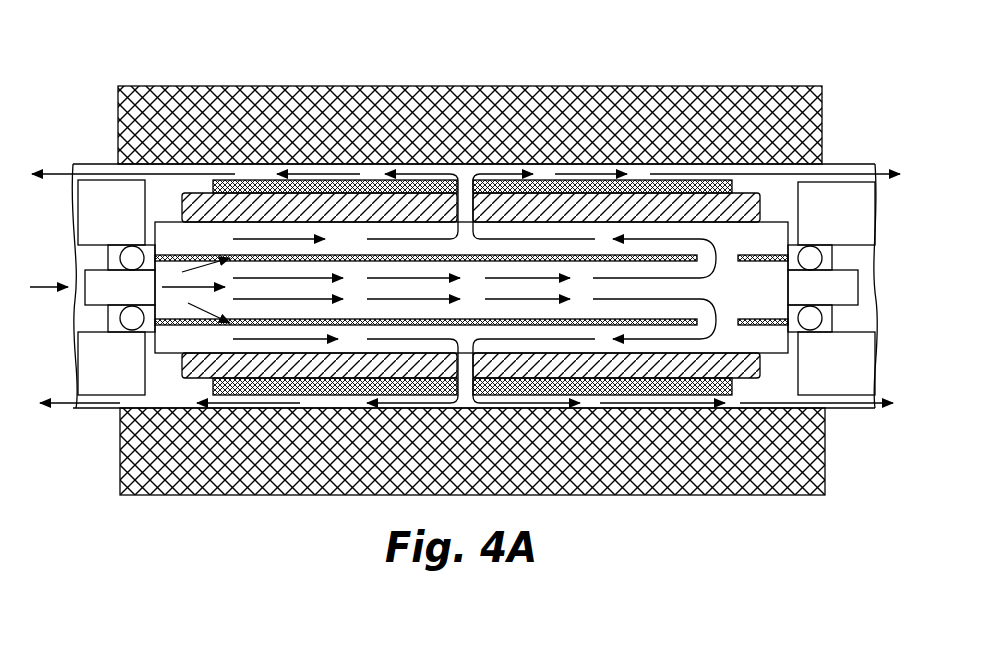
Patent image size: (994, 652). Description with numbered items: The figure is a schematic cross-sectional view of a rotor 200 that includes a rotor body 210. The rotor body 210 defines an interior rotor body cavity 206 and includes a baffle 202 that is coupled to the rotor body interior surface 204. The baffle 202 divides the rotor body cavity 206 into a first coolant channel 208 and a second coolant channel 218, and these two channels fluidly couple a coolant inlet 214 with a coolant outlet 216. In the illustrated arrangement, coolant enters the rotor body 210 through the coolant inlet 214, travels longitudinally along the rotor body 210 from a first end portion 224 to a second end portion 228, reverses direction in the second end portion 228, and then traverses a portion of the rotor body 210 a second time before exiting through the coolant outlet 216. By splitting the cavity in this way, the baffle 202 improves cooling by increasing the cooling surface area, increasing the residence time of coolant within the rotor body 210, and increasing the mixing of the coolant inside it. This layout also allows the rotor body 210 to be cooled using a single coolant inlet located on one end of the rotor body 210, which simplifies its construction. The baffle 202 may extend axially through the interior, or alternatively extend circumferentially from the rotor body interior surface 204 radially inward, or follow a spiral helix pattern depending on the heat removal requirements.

The rotor 200 is at (126, 62).
The baffle 202 is at (343, 228).
The rotor body interior surface 204 is at (163, 228).
The rotor body cavity 206 is at (764, 306).
The first coolant channel 208 is at (571, 340).
The rotor body 210 is at (168, 216).
The coolant inlet 214 is at (98, 280).
The coolant outlet 216 is at (440, 190).
The second coolant channel 218 is at (642, 278).
The first end portion 224 is at (177, 337).
The second end portion 228 is at (760, 338).